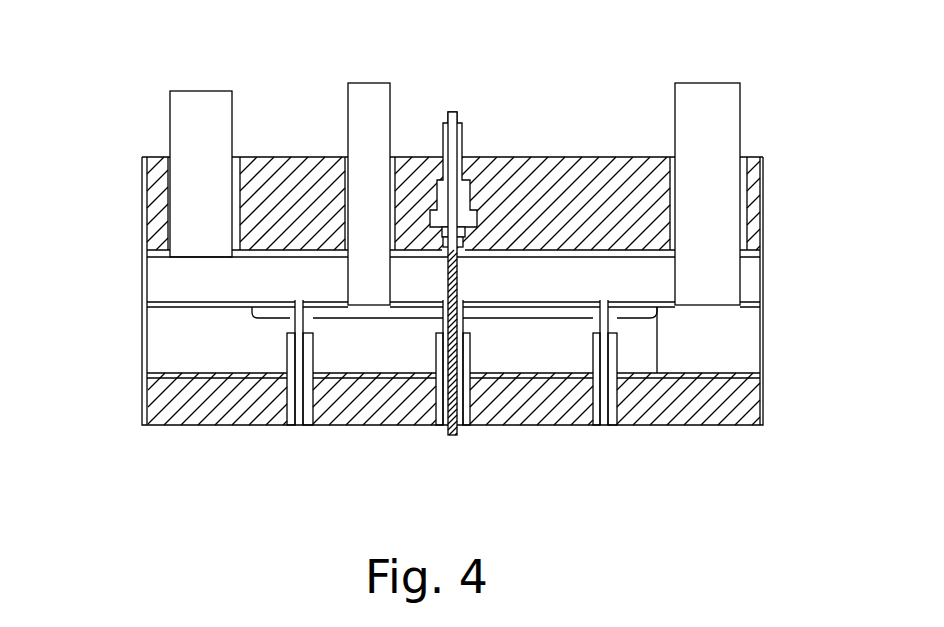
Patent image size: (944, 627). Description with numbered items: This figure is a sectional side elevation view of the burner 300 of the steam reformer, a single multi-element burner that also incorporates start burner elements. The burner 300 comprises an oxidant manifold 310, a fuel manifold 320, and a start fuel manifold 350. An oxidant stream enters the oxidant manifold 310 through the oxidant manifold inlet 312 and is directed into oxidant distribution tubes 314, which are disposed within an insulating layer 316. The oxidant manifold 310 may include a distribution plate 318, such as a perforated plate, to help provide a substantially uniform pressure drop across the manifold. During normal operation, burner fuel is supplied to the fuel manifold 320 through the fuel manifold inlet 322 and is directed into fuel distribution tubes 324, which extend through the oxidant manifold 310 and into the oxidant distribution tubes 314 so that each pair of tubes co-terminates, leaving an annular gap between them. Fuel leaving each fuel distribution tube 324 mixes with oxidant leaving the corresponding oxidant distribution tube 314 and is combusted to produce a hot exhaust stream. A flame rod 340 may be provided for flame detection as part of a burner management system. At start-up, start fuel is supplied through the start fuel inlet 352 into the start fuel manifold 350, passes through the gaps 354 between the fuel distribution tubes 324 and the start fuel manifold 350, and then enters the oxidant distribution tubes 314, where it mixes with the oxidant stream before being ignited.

The burner 300 is at (600, 68).
The oxidant manifold 310 is at (222, 350).
The oxidant manifold inlet 312 is at (742, 115).
The oxidant distribution tubes 314 is at (617, 363).
The insulating layer 316 is at (180, 403).
The distribution plate 318 is at (657, 328).
The fuel manifold 320 is at (563, 287).
The fuel manifold inlet 322 is at (170, 117).
The fuel distribution tubes 324 is at (608, 425).
The flame rod 340 is at (445, 437).
The start fuel manifold 350 is at (275, 312).
The start fuel inlet 352 is at (348, 115).
The gaps 354 is at (612, 318).